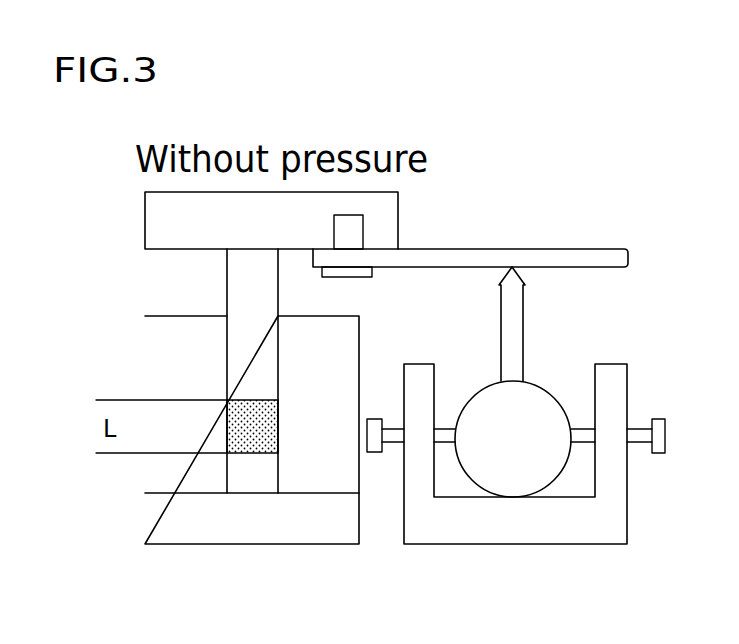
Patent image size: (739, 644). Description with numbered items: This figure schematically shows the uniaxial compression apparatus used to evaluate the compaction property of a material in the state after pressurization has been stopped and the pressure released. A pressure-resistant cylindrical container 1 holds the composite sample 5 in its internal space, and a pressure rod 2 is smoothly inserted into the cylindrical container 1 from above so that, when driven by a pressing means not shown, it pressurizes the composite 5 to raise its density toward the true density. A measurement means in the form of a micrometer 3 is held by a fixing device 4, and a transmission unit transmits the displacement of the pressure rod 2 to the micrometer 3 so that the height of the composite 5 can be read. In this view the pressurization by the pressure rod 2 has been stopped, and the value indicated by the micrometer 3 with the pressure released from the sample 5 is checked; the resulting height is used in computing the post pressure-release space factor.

The cylindrical container 1 is at (169, 392).
The pressure rod 2 is at (238, 276).
The measurement means (micrometer) 3 is at (538, 406).
The fixing device 4 is at (617, 494).
The composite (sample) 5 is at (253, 445).